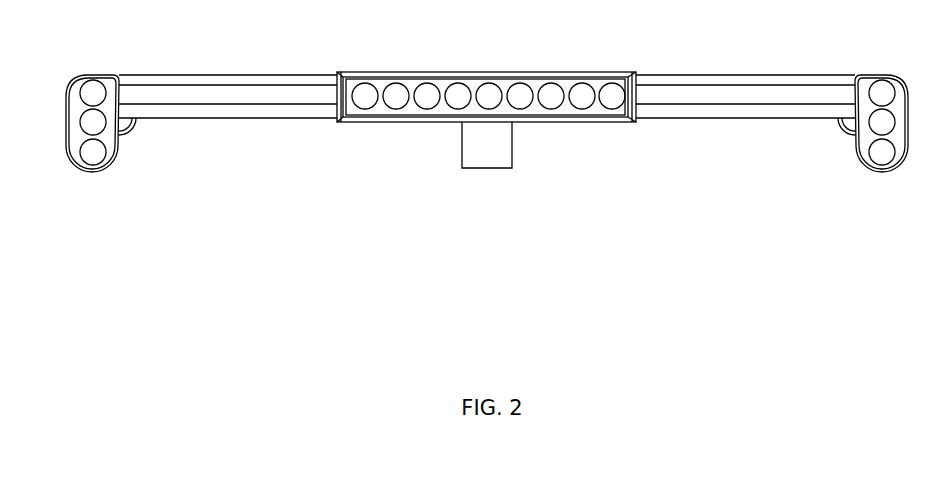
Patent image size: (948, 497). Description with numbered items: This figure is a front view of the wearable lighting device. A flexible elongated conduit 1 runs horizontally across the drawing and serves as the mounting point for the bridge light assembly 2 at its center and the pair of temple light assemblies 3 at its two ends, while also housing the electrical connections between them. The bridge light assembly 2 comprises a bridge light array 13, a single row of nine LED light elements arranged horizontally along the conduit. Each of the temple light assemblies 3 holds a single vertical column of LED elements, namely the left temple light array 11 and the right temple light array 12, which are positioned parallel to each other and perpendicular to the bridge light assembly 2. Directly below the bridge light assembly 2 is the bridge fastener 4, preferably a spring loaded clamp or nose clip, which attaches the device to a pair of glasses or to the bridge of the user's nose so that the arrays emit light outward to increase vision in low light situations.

The elongated conduit 1 is at (245, 112).
The bridge light assembly 2 is at (411, 72).
The pair of temple light assemblies 3 is at (79, 85).
The bridge fastener 4 is at (483, 155).
The left temple light array 11 is at (882, 153).
The right temple light array 12 is at (98, 155).
The bridge light array 13 is at (365, 97).